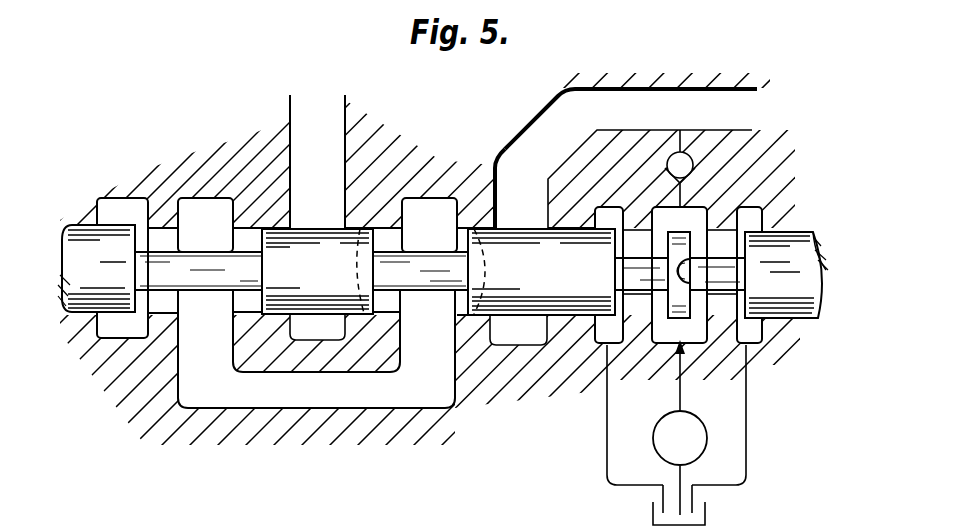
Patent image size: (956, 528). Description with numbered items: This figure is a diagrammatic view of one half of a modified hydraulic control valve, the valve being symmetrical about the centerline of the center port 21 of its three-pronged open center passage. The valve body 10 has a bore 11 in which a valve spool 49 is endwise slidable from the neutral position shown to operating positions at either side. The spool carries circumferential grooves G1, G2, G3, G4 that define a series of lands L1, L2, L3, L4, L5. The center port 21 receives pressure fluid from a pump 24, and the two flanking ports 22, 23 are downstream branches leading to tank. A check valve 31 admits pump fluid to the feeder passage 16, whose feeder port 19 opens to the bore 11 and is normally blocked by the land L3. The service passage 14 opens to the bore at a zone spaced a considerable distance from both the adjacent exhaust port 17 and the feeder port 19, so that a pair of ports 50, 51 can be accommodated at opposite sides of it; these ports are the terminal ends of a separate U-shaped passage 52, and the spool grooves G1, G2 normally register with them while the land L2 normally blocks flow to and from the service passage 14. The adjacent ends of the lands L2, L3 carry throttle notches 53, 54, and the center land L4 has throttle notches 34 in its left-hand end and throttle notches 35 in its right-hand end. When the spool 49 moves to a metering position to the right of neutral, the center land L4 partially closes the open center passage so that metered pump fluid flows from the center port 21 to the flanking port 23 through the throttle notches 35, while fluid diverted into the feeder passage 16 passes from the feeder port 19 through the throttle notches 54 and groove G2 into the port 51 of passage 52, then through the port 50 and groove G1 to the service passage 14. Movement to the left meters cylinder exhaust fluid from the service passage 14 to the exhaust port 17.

The body 10 is at (706, 58).
The bore 11 is at (790, 240).
The service passage 14 is at (331, 156).
The feeder passage 16 is at (649, 119).
The exhaust port 17 is at (110, 210).
The feeder port 19 is at (499, 226).
The center port 21 is at (700, 214).
The flanking port 22 is at (612, 213).
The flanking port 23 is at (752, 212).
The pump 24 is at (703, 438).
The check valve 31 is at (689, 155).
The throttle notches 34 is at (682, 226).
The throttle notches 35 is at (700, 278).
The valve spool 49 is at (822, 284).
The port 50 is at (206, 212).
The port 51 is at (419, 214).
The U-shaped passage 52 is at (329, 401).
The throttle notches 53 is at (358, 264).
The throttle notches 54 is at (480, 266).
The spool groove G1 is at (216, 254).
The spool groove G2 is at (440, 254).
The spool groove G3 is at (640, 300).
The spool groove G4 is at (722, 322).
The land L1 is at (96, 268).
The land L2 is at (309, 278).
The land L3 is at (554, 279).
The center land L4 is at (614, 270).
The land L5 is at (818, 258).